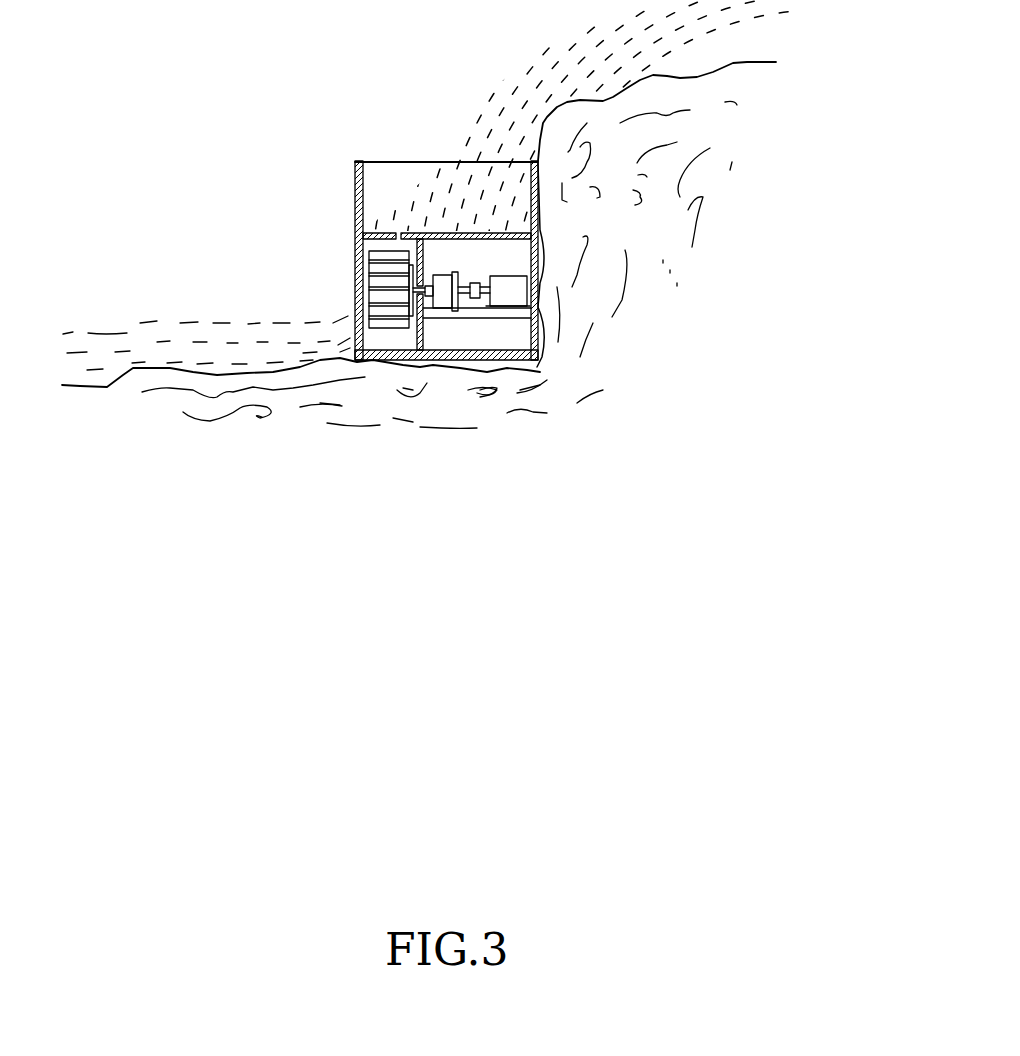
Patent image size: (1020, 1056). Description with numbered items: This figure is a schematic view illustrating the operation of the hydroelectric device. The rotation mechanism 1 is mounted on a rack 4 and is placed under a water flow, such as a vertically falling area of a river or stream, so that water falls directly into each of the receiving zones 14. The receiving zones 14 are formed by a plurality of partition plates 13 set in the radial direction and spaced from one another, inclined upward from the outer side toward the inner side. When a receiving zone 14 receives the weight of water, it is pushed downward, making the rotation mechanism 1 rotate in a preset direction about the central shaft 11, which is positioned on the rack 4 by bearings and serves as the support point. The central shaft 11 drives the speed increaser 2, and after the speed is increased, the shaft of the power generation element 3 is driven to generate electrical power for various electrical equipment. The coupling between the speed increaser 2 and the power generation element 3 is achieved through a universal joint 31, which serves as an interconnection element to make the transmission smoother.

The rotation mechanism 1 is at (352, 238).
The central shaft 11 is at (417, 328).
The partition plates 13 is at (375, 264).
The receiving zones 14 is at (375, 280).
The speed increaser 2 is at (448, 300).
The power generation element 3 is at (507, 300).
The universal joint 31 is at (477, 300).
The rack 4 is at (355, 162).